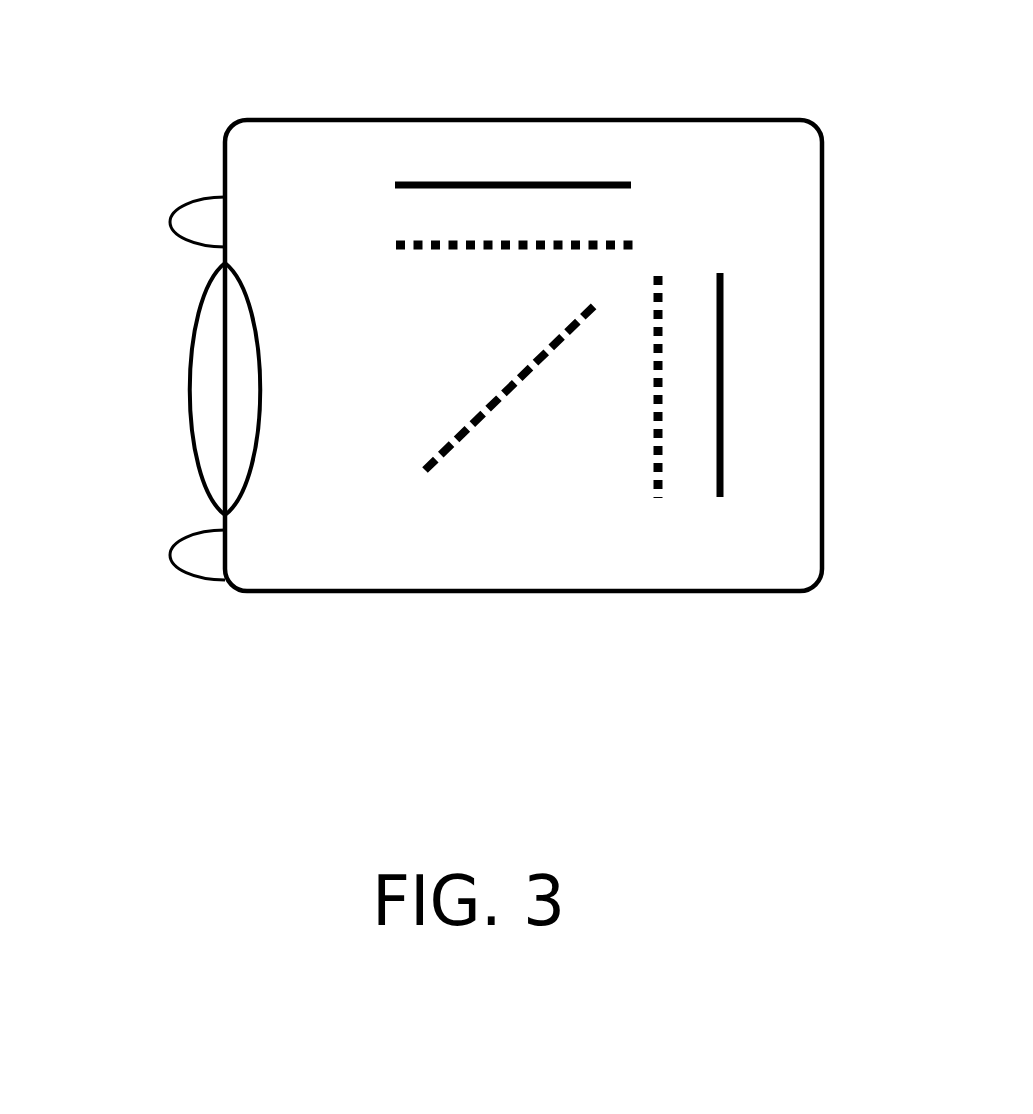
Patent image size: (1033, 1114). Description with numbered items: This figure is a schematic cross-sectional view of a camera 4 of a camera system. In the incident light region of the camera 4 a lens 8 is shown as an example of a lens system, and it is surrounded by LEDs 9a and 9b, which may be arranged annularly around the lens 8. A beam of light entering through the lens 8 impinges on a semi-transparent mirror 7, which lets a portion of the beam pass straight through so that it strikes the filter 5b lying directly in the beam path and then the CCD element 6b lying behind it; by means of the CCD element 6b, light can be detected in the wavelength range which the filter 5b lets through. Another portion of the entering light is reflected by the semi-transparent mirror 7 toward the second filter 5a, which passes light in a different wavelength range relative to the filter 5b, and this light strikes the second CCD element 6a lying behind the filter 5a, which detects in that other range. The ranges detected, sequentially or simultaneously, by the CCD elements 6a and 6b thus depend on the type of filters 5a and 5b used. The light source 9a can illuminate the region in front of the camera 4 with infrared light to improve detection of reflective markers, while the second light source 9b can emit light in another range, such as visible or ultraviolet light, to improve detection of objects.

The camera 4 is at (824, 210).
The second filter 5a is at (627, 242).
The filter 5b is at (660, 497).
The second CCD element 6a is at (491, 182).
The CCD element 6b is at (722, 363).
The semi-transparent mirror 7 is at (497, 390).
The lens 8 is at (197, 322).
The LED 9a is at (173, 221).
The second LED 9b is at (170, 557).